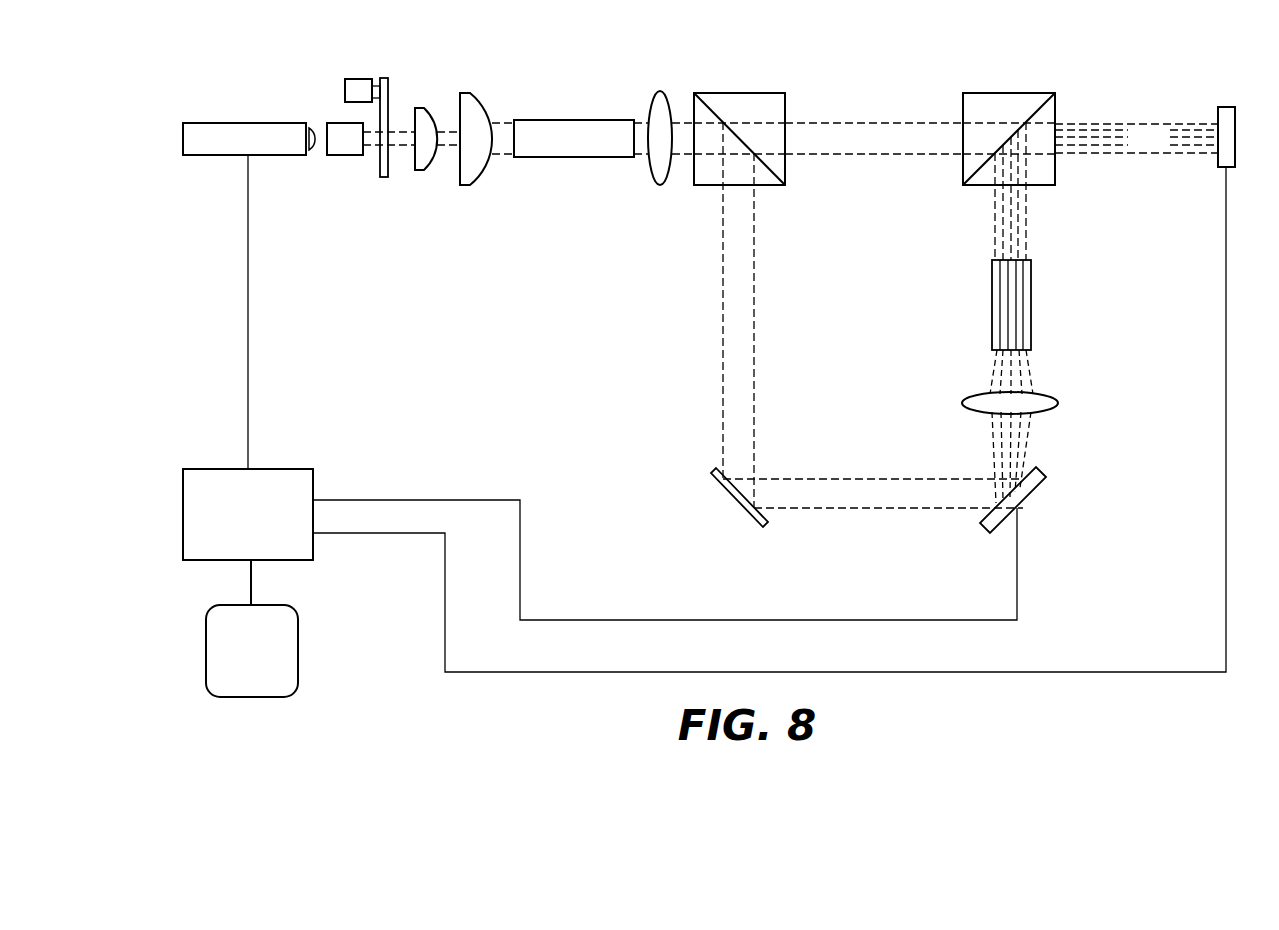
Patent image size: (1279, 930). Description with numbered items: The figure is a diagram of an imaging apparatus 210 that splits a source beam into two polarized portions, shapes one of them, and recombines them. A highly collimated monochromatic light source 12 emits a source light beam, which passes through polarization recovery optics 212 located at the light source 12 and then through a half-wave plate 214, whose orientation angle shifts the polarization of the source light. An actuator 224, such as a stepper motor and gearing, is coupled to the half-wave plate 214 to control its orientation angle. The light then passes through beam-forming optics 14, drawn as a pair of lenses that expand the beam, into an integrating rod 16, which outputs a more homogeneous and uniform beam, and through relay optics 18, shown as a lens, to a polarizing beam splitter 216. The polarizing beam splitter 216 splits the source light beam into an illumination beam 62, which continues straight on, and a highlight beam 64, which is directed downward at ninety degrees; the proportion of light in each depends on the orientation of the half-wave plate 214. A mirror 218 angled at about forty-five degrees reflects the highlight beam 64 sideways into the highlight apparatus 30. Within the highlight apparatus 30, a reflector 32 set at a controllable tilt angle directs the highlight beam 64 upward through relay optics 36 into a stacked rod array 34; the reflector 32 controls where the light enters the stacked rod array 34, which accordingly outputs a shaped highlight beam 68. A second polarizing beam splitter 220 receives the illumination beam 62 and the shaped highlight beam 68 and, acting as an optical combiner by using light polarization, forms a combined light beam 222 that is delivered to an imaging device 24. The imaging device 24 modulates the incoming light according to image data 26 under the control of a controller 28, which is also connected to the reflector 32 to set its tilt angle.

The light source 12 is at (266, 148).
The beam-forming optics 14 is at (492, 88).
The integrating rod 16 is at (581, 136).
The relay optics 18 is at (656, 105).
The imaging device 24 is at (1226, 106).
The image data 26 is at (242, 685).
The controller 28 is at (238, 537).
The highlight apparatus 30 is at (731, 440).
The reflector 32 is at (701, 543).
The stacked rod array 34 is at (1032, 300).
The relay optics 36 is at (1043, 403).
The illumination beam 62 is at (886, 148).
The highlight beam 64 is at (728, 325).
The shaped highlight beam 68 is at (982, 218).
The imaging apparatus 210 is at (1110, 41).
The polarization recovery optics 212 is at (333, 147).
The half-wave plate 214 is at (383, 173).
The polarizing beam splitter 216 is at (738, 100).
The mirror 218 is at (732, 497).
The second polarizing beam splitter 220 is at (1007, 101).
The combined light beam 222 is at (1134, 147).
The actuator 224 is at (352, 91).